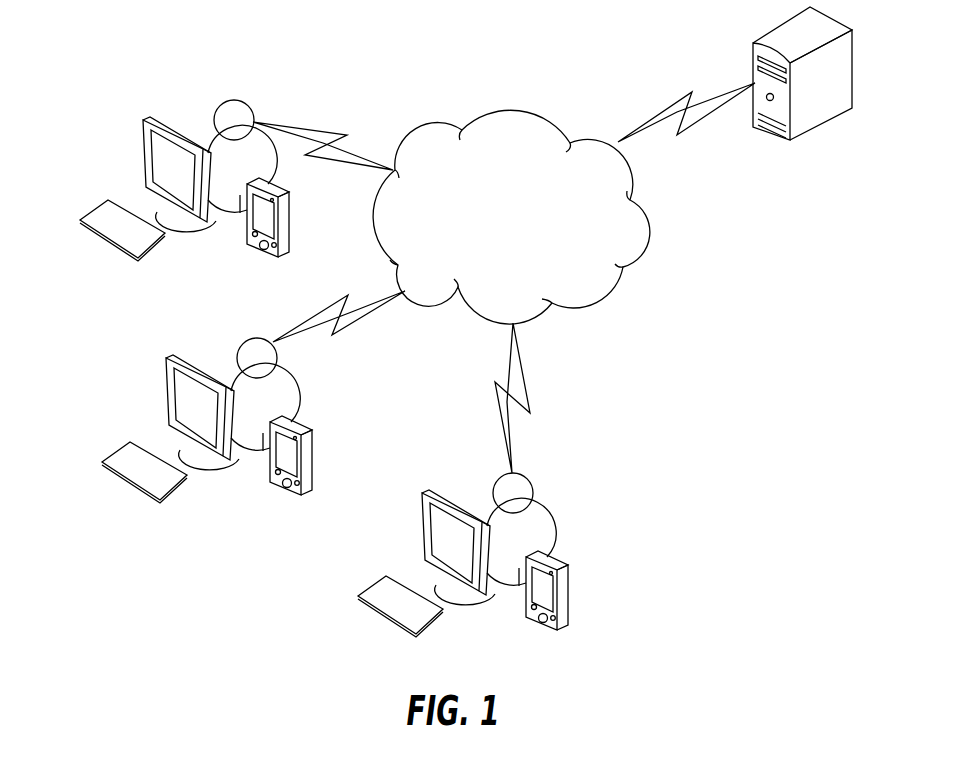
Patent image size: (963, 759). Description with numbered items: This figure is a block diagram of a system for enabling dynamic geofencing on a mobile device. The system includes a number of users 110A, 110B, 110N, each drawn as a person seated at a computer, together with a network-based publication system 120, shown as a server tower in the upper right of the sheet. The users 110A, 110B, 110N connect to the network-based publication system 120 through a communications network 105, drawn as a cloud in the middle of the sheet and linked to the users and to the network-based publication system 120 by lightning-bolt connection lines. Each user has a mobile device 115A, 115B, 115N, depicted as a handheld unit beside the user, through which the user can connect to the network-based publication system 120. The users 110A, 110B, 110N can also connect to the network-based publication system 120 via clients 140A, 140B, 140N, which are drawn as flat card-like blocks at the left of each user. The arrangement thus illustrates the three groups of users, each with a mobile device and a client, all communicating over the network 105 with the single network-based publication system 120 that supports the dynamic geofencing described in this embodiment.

The network 105 is at (519, 110).
The user 110A is at (220, 105).
The user 110B is at (243, 345).
The user 110N is at (499, 479).
The mobile device 115A is at (290, 223).
The mobile device 115B is at (313, 462).
The mobile device 115N is at (569, 595).
The network-based publication system 120 is at (782, 23).
The client 140A is at (88, 212).
The client 140B is at (112, 452).
The client 140N is at (367, 584).